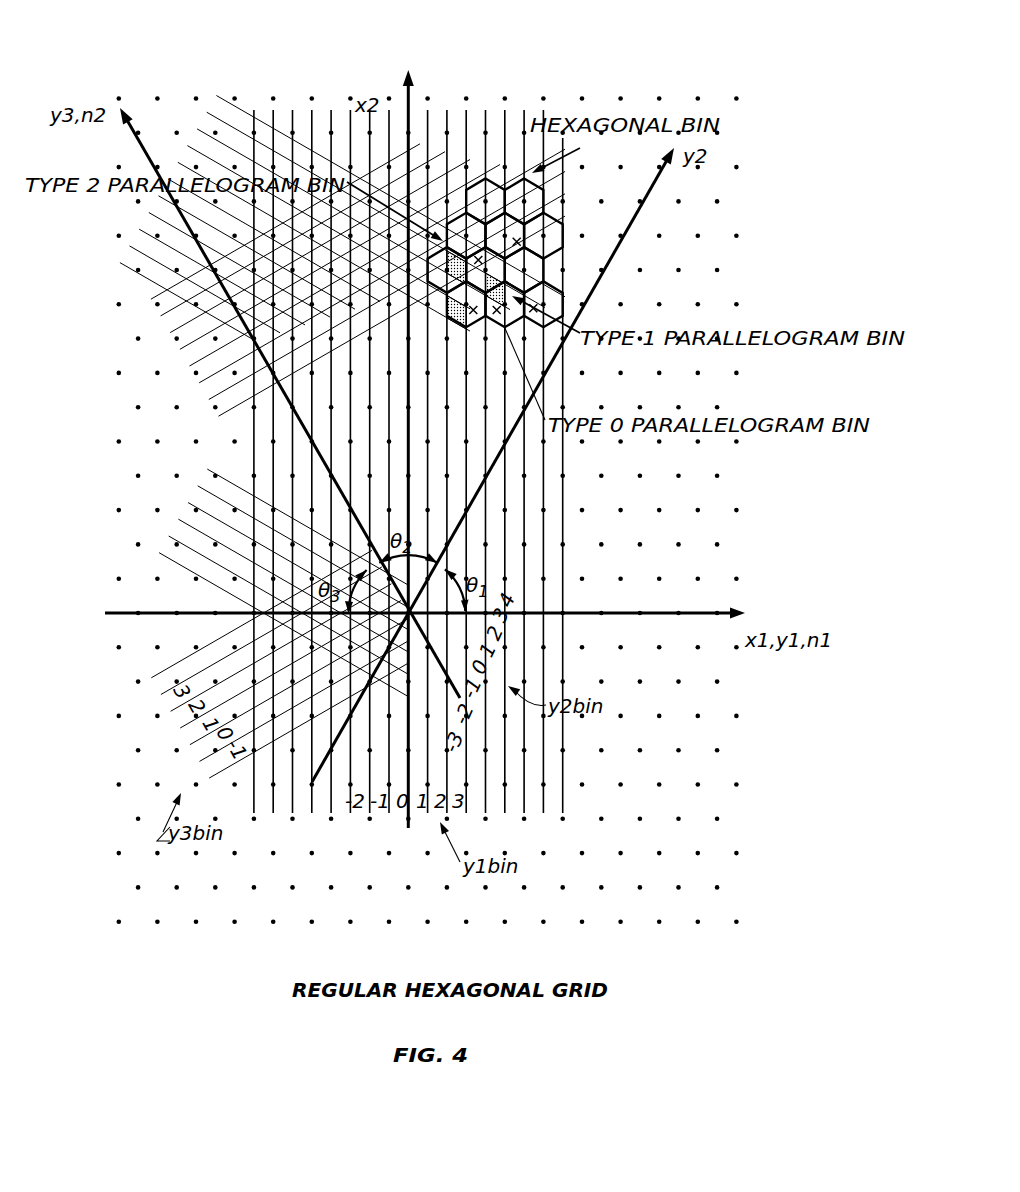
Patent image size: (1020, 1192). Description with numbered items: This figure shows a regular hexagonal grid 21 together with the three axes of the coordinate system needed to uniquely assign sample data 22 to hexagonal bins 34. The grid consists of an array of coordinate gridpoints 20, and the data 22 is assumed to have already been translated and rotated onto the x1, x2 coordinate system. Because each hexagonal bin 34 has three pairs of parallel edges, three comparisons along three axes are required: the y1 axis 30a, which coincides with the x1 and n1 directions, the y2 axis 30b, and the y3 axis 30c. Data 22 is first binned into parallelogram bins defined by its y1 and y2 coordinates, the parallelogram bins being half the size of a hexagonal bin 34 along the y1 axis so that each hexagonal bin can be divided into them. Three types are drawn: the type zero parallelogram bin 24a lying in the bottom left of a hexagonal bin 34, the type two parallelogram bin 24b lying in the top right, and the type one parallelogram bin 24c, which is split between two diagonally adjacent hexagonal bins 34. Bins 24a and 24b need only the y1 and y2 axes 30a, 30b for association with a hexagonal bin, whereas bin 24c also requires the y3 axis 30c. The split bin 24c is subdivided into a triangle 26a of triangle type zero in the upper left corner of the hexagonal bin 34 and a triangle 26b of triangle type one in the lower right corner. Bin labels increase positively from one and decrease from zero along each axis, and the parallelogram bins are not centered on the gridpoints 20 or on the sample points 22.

The coordinate gridpoints 20 is at (486, 179).
The hexagonal grid 21 is at (768, 72).
The data 22 is at (476, 258).
The type 0 parallelogram bin 24a is at (457, 328).
The type 2 parallelogram bin 24b is at (445, 243).
The type 1 parallelogram bin 24c is at (545, 212).
The triangle of triangle type 0 26a is at (551, 228).
The triangle of triangle type 1 26b is at (446, 272).
The y1 axis 30a is at (652, 612).
The y2 axis 30b is at (616, 253).
The y3 axis 30c is at (200, 253).
The hexagonal bin 34 is at (502, 177).